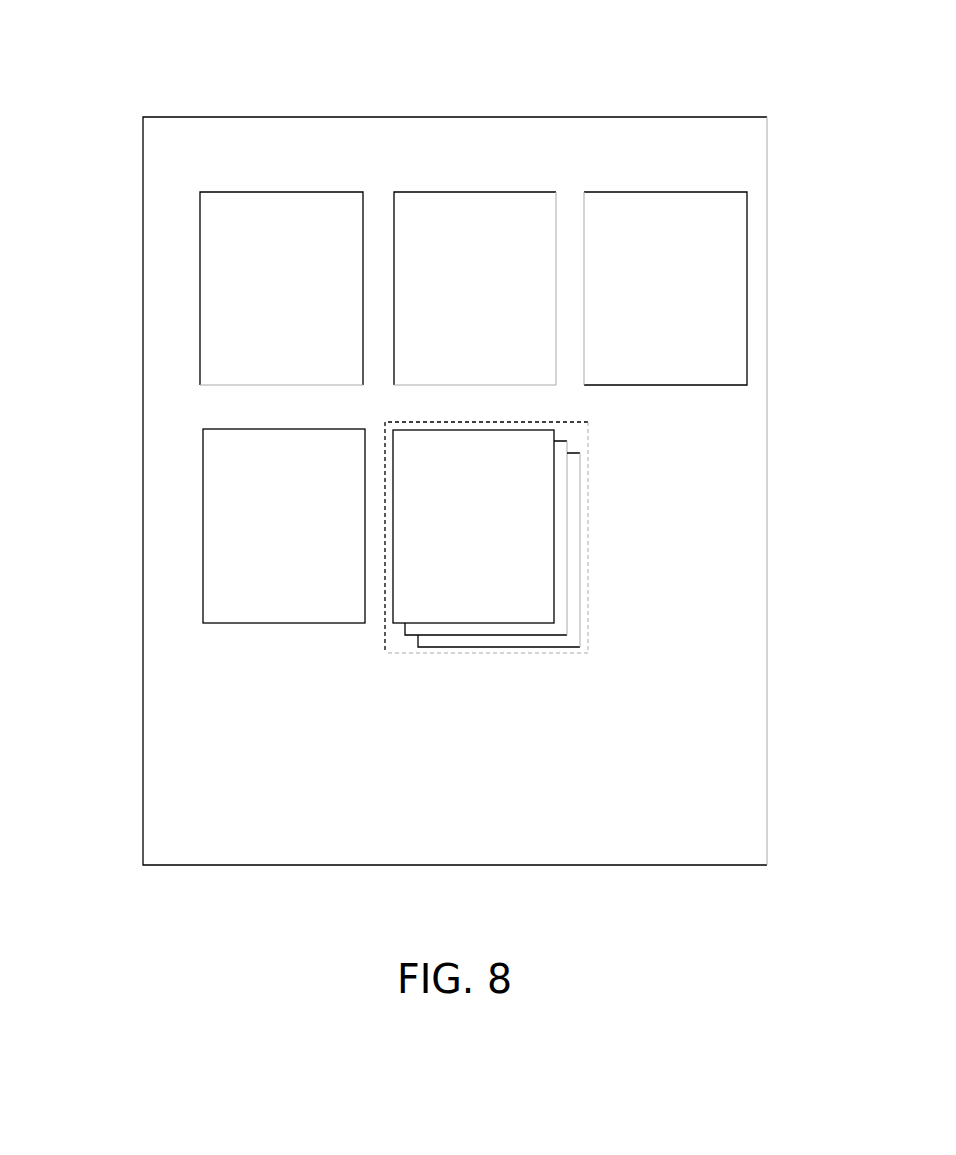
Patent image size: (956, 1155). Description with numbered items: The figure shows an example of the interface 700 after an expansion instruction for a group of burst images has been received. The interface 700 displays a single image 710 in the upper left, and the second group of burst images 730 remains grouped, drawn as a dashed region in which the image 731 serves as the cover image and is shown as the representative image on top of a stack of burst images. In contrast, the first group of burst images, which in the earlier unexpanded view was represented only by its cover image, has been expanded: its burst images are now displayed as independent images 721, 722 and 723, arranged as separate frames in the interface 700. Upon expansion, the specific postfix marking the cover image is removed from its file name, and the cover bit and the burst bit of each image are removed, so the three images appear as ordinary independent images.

The interface 700 is at (268, 117).
The image 710 is at (200, 253).
The image 721 is at (475, 192).
The image 722 is at (664, 192).
The image 723 is at (203, 497).
The second group of burst images 730 is at (588, 428).
The image 731 is at (554, 497).